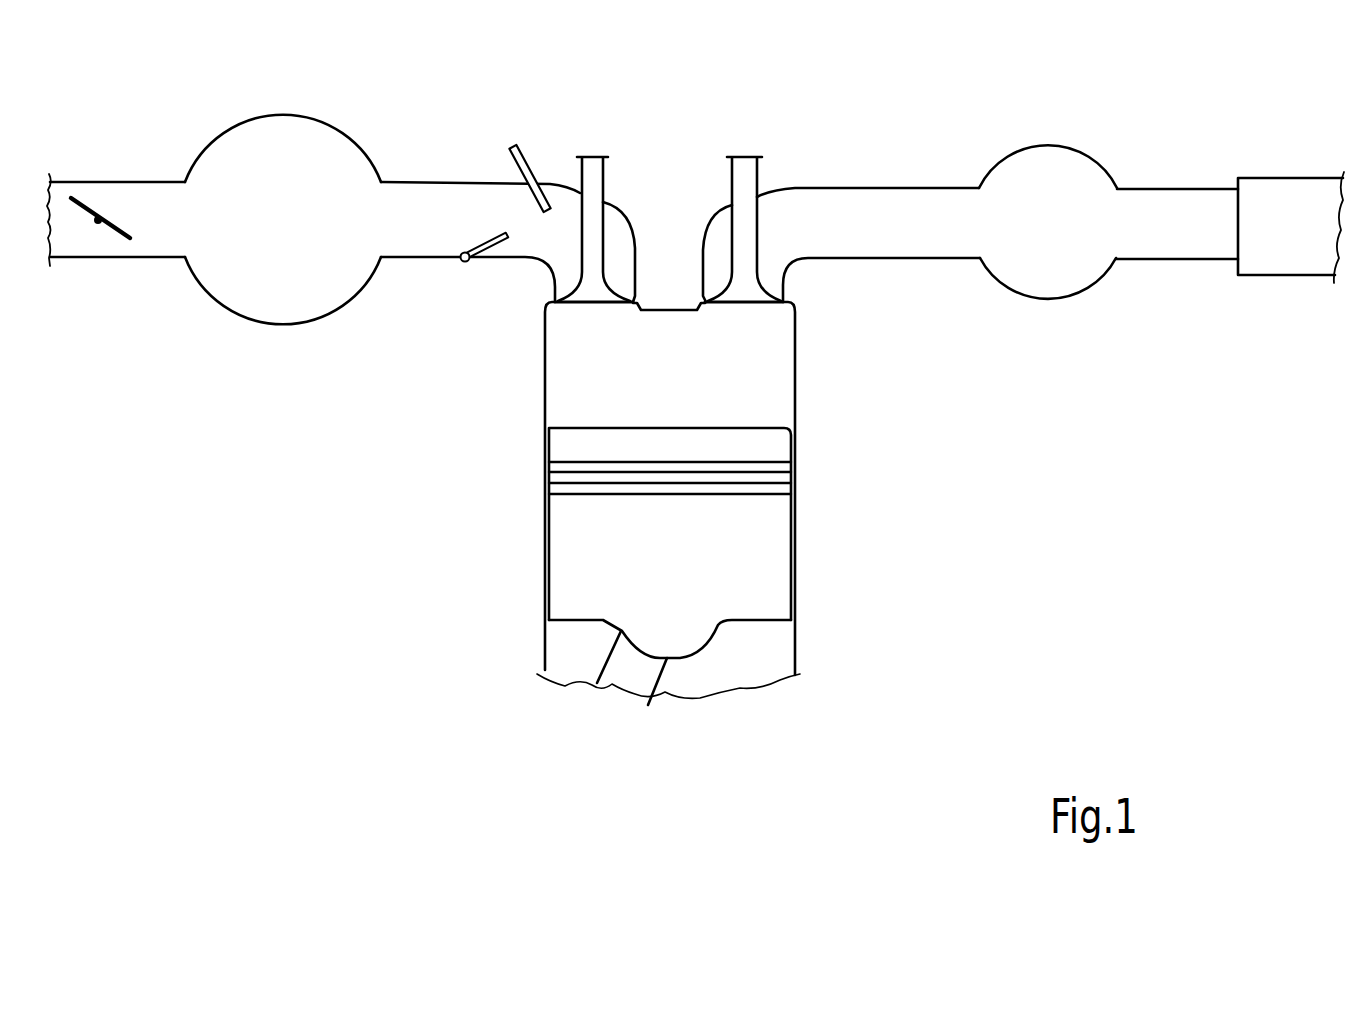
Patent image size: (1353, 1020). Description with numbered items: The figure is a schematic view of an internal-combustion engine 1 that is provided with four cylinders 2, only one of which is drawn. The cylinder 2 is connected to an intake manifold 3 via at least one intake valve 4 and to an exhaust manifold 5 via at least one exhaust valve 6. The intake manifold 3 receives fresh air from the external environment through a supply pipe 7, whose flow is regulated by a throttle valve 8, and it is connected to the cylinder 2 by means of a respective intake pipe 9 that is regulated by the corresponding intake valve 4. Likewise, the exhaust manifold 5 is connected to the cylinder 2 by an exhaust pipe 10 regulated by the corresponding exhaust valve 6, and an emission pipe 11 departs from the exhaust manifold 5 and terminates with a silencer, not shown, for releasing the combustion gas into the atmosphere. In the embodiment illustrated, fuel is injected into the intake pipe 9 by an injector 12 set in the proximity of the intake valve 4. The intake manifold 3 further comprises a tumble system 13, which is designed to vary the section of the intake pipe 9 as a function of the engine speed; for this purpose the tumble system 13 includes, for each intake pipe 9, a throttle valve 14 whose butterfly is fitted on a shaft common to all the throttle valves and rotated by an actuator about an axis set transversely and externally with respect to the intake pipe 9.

The internal-combustion engine 1 is at (346, 524).
The cylinder 2 is at (790, 354).
The intake manifold 3 is at (279, 317).
The intake valve 4 is at (601, 189).
The exhaust manifold 5 is at (1056, 300).
The exhaust valve 6 is at (742, 198).
The supply pipe 7 is at (146, 249).
The throttle valve 8 is at (89, 210).
The intake pipe 9 is at (397, 252).
The exhaust pipe 10 is at (883, 254).
The emission pipe 11 is at (1268, 192).
The injector 12 is at (525, 150).
The tumble system 13 is at (469, 153).
The throttle valve 14 is at (493, 262).